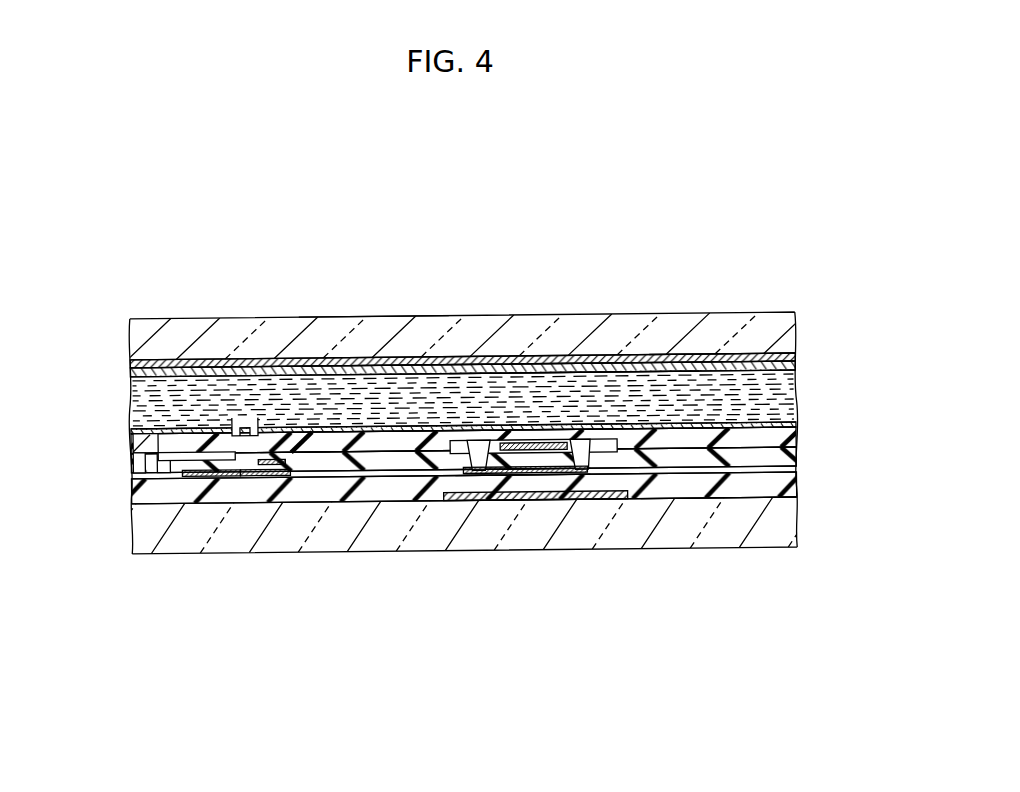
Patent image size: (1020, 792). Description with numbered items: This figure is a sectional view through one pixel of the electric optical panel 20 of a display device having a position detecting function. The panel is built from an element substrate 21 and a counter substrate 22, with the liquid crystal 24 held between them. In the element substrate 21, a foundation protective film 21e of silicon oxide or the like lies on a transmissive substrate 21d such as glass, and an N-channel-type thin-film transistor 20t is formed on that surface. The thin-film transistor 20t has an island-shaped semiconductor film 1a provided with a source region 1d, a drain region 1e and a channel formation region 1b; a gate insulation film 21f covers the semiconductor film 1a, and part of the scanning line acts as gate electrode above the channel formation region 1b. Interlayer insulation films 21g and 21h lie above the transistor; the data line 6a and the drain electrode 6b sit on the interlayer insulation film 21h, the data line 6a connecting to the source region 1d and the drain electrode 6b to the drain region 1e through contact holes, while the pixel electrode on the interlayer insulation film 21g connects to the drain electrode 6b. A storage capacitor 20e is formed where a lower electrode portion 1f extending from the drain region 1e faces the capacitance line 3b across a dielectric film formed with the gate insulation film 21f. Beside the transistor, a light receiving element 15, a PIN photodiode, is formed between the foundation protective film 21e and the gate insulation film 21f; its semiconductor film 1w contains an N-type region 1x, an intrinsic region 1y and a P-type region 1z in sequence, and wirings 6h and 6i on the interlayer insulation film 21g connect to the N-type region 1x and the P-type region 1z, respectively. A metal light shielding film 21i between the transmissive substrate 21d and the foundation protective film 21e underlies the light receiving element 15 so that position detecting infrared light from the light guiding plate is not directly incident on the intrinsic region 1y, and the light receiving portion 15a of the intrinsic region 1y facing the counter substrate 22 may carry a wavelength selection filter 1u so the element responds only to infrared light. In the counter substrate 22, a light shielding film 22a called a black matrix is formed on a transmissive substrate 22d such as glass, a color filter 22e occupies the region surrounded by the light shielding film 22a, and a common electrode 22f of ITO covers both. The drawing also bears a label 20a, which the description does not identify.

The electric optical panel 20 is at (654, 240).
The display surface 20a is at (370, 310).
The thin-film transistor 20t is at (161, 422).
The storage capacitor 20e is at (296, 442).
The counter substrate 22 is at (750, 329).
The light shielding film 22a is at (236, 353).
The transmissive substrate 22d is at (807, 312).
The color filter 22e is at (571, 362).
The common electrode 22f is at (492, 364).
The liquid crystal 24 is at (416, 388).
The element substrate 21 is at (749, 529).
The transmissive substrate 21d is at (807, 497).
The foundation protective film 21e is at (807, 472).
The gate insulation film 21f is at (790, 467).
The interlayer insulation film 21g is at (777, 447).
The interlayer insulation film 21h is at (768, 432).
The light shielding film 21i is at (624, 498).
The data line 6a is at (134, 439).
The drain electrode 6b is at (232, 440).
The wiring 6h is at (470, 443).
The wiring 6i is at (612, 443).
The light receiving element 15 is at (431, 611).
The light receiving portion 15a is at (518, 443).
The wavelength selection filter 1u is at (548, 443).
The semiconductor film 1w is at (468, 484).
The N-type region 1x is at (490, 478).
The intrinsic region 1y is at (535, 478).
The P-type region 1z is at (582, 478).
The semiconductor film 1a is at (210, 473).
The channel formation region 1b is at (183, 458).
The source region 1d is at (143, 452).
The drain region 1e is at (261, 481).
The lower electrode portion 1f is at (292, 473).
The capacitance line 3b is at (303, 456).